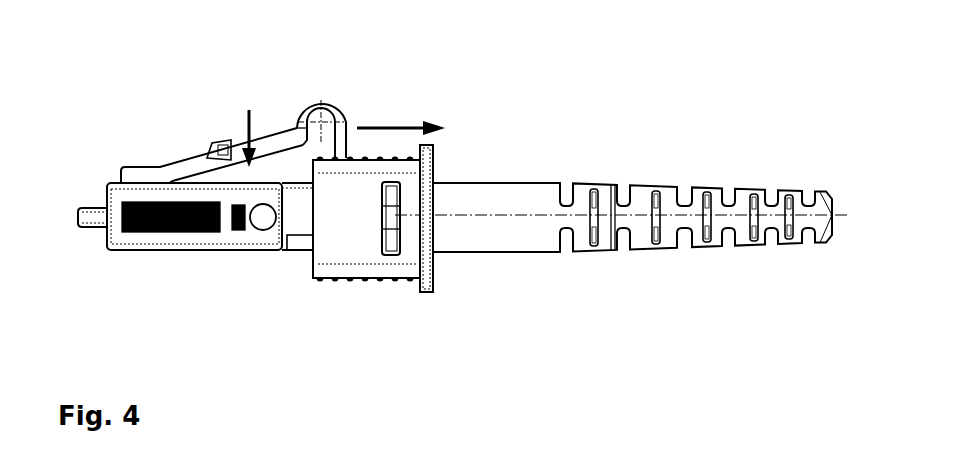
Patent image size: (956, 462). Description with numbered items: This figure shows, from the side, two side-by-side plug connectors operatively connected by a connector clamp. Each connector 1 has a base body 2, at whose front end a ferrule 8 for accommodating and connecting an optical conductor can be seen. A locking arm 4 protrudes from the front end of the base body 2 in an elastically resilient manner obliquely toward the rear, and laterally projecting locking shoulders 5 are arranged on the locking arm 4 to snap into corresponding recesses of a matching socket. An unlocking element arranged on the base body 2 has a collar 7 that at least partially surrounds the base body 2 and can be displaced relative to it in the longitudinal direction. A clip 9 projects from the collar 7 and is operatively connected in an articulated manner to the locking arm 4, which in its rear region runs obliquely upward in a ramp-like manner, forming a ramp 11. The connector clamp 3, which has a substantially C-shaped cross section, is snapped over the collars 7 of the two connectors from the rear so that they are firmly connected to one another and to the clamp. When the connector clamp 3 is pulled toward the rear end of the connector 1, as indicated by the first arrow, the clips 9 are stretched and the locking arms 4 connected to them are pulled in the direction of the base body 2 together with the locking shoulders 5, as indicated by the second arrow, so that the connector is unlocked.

The connector 1 is at (444, 221).
The base body 2 is at (157, 237).
The connector clamp 3 is at (360, 305).
The locking arm 4 is at (195, 158).
The locking shoulders 5 is at (223, 138).
The collar 7 is at (398, 250).
The ferrule 8 is at (93, 219).
The clip 9 is at (341, 135).
The ramp 11 is at (317, 100).